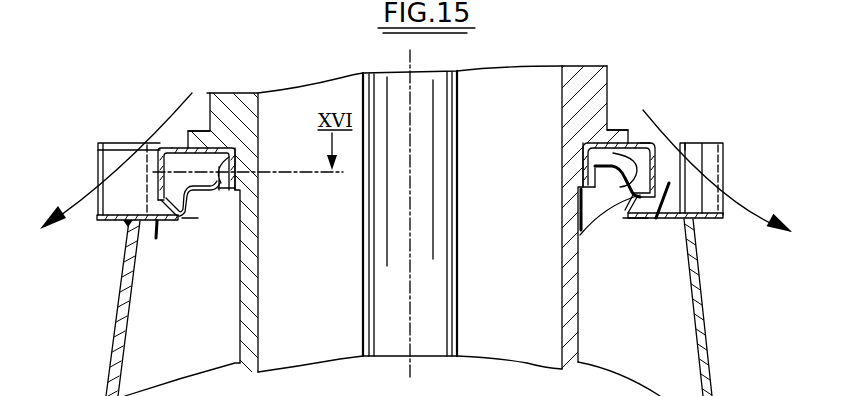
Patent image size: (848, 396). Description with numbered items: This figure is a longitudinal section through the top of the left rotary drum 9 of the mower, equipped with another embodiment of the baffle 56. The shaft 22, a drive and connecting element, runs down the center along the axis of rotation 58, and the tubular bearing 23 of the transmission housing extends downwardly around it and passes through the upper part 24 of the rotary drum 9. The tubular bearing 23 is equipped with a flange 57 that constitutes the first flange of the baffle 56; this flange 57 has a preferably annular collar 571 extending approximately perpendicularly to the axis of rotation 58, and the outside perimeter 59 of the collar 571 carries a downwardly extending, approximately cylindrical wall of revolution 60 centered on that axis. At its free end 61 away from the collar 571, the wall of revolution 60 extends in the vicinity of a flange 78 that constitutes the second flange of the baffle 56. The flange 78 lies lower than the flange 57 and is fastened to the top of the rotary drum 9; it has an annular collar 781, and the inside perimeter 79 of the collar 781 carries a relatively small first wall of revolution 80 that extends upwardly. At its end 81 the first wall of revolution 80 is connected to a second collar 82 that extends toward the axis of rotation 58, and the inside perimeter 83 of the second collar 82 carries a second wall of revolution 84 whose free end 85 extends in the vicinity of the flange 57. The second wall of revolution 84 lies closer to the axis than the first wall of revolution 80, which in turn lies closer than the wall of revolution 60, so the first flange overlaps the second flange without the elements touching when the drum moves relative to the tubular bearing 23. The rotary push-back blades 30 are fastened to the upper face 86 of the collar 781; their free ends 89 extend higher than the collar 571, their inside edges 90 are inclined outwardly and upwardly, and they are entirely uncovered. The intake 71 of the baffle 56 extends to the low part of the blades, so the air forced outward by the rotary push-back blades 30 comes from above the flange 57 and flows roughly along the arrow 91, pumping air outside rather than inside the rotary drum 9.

The rotary drum 9 is at (118, 357).
The shaft 22 is at (427, 268).
The tubular bearing 23 is at (254, 320).
The upper part 24 is at (670, 64).
The rotary push-back blades 30 is at (113, 173).
The baffle 56 is at (670, 185).
The flange 57 is at (209, 138).
The collar 571 is at (632, 143).
The axis of rotation 58 is at (412, 366).
The outside perimeter 59 is at (645, 147).
The wall of revolution 60 is at (668, 180).
The free end 61 is at (167, 208).
The intake 71 is at (659, 204).
The flange 78 is at (157, 234).
The collar 781 is at (707, 218).
The inside perimeter 79 is at (642, 219).
The first wall of revolution 80 is at (582, 225).
The end 81 is at (588, 146).
The second collar 82 is at (612, 186).
The inside perimeter 83 is at (216, 192).
The second wall of revolution 84 is at (226, 182).
The free end 85 is at (222, 152).
The upper face 86 is at (98, 212).
The free ends 89 is at (120, 143).
The inside edges 90 is at (163, 152).
The arrow 91 is at (82, 214).